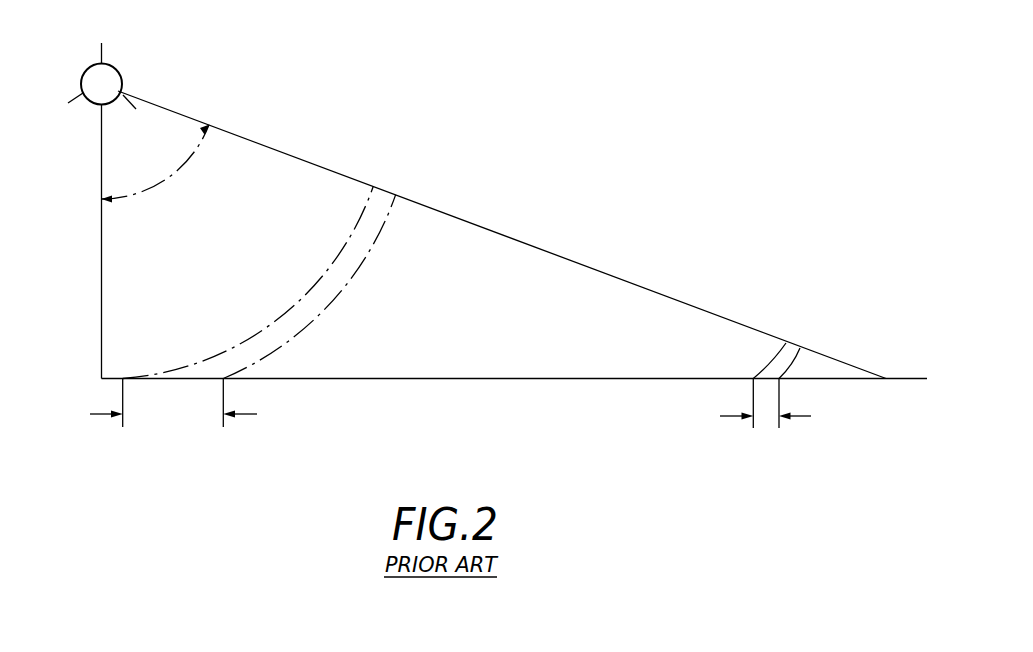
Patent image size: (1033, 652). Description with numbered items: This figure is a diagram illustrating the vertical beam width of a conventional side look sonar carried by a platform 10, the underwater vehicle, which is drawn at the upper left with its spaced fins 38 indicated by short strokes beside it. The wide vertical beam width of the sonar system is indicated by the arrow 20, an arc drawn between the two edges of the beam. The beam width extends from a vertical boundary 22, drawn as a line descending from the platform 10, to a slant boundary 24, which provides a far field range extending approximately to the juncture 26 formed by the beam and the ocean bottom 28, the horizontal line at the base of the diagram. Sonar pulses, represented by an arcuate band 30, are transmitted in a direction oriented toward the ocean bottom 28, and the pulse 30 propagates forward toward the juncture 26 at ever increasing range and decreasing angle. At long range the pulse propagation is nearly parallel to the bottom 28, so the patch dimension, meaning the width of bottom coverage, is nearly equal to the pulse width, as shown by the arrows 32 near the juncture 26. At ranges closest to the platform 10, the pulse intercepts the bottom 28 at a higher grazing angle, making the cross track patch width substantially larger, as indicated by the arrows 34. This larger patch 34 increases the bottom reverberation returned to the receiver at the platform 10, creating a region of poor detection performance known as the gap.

The platform 10 is at (83, 79).
The arrow indicating vertical beam width 20 is at (160, 183).
The vertical boundary 22 is at (100, 283).
The slant boundary 24 is at (447, 213).
The juncture 26 is at (837, 355).
The ocean bottom 28 is at (533, 379).
The arcuate band representing sonar pulse 30 is at (288, 322).
The arrows indicating patch dimension at long range 32 is at (751, 405).
The arrows indicating cross track patch width at close range 34 is at (185, 405).
The fins 38 is at (83, 101).